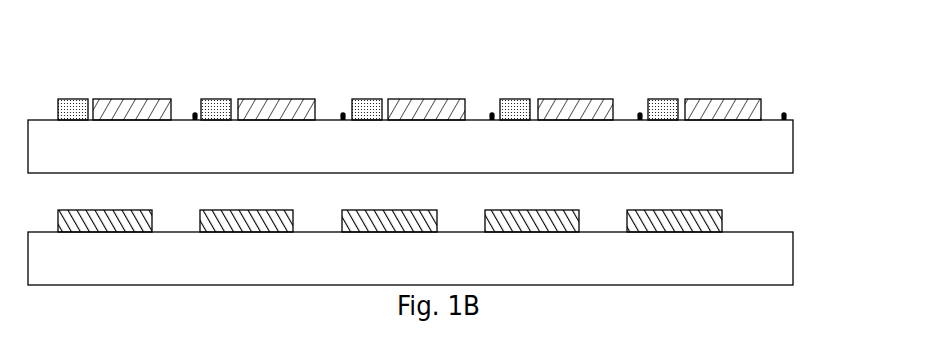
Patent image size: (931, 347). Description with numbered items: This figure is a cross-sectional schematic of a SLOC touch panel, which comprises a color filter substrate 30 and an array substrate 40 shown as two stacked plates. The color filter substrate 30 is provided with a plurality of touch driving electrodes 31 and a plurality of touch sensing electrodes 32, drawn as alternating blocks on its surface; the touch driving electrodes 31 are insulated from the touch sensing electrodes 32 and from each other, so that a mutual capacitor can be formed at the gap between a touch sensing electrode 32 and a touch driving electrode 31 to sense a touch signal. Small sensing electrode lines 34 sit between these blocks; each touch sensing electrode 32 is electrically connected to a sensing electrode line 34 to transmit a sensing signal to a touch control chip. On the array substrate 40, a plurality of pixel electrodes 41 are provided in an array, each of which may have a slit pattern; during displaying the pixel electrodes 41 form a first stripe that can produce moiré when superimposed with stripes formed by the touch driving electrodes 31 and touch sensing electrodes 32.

The color filter substrate 30 is at (783, 160).
The touch driving electrode 31 is at (372, 97).
The touch sensing electrode 32 is at (455, 115).
The sensing electrode line 34 is at (640, 113).
The array substrate 40 is at (785, 265).
The pixel electrode 41 is at (722, 223).